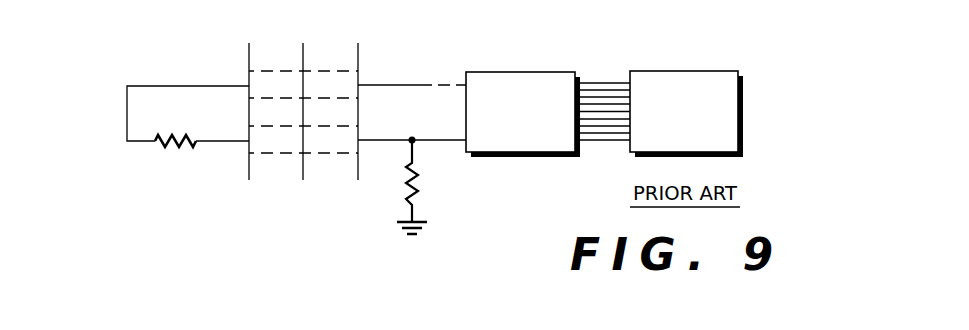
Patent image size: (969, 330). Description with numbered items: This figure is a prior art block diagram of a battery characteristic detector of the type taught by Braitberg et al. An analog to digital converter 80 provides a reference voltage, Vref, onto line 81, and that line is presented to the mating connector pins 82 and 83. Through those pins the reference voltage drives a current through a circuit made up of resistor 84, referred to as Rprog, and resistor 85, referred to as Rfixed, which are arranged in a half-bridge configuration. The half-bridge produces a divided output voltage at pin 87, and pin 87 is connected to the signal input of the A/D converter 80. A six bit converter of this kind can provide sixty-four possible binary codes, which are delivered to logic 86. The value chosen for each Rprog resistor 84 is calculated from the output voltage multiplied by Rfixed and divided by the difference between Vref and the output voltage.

The analog to digital (A/D) converter 80 is at (545, 72).
The line 81 is at (415, 83).
The mating connector pin 82 is at (336, 44).
The mating connector pin 83 is at (270, 44).
The resistor (Rprog) 84 is at (184, 147).
The resistor (Rfixed) 85 is at (418, 187).
The logic 86 is at (699, 137).
The pin 87 is at (227, 139).